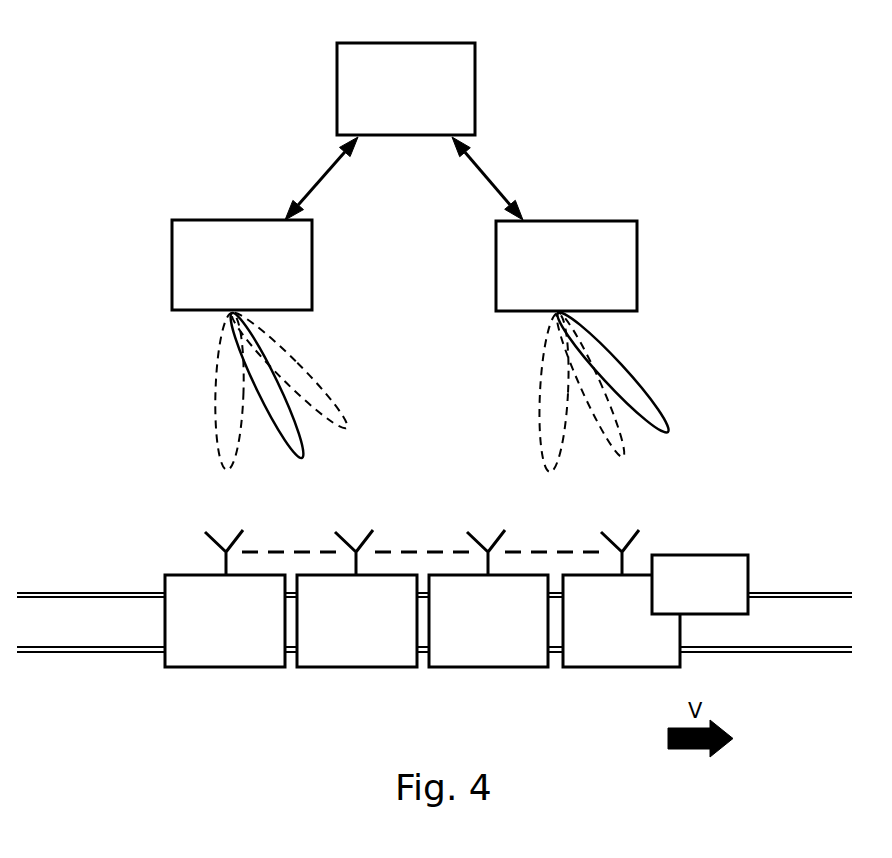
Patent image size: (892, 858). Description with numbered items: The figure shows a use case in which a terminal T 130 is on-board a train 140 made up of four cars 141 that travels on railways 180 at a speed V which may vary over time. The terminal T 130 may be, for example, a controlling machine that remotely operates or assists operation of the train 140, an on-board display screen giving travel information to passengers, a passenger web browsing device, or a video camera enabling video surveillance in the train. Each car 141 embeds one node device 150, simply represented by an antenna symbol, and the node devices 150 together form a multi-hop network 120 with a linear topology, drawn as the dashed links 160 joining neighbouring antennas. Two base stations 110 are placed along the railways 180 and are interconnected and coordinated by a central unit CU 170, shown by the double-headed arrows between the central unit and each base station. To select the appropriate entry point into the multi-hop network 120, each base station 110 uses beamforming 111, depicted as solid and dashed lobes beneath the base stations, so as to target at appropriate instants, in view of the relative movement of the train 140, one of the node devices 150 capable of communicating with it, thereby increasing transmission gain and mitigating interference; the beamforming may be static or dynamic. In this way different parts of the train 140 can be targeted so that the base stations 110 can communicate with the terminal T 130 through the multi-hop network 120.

The base station 110 is at (313, 268).
The beamforming 111 is at (309, 360).
The multi-hop network 120 is at (642, 502).
The terminal T 130 is at (708, 555).
The train 140 is at (168, 560).
The car 141 is at (205, 690).
The node device 150 is at (612, 541).
The communication link 160 is at (280, 524).
The central unit CU 170 is at (476, 88).
The railways 180 is at (76, 654).